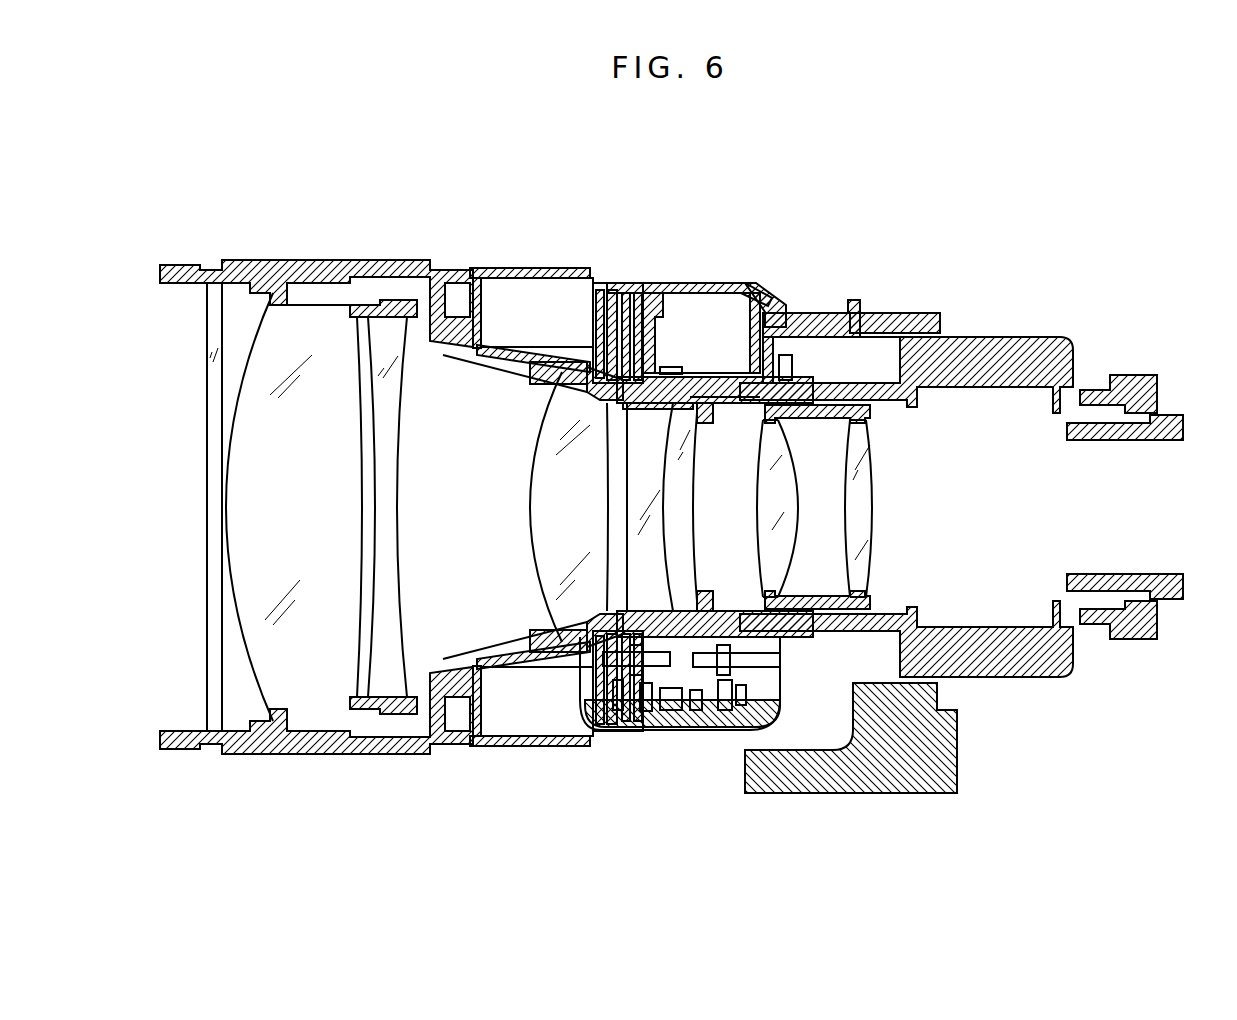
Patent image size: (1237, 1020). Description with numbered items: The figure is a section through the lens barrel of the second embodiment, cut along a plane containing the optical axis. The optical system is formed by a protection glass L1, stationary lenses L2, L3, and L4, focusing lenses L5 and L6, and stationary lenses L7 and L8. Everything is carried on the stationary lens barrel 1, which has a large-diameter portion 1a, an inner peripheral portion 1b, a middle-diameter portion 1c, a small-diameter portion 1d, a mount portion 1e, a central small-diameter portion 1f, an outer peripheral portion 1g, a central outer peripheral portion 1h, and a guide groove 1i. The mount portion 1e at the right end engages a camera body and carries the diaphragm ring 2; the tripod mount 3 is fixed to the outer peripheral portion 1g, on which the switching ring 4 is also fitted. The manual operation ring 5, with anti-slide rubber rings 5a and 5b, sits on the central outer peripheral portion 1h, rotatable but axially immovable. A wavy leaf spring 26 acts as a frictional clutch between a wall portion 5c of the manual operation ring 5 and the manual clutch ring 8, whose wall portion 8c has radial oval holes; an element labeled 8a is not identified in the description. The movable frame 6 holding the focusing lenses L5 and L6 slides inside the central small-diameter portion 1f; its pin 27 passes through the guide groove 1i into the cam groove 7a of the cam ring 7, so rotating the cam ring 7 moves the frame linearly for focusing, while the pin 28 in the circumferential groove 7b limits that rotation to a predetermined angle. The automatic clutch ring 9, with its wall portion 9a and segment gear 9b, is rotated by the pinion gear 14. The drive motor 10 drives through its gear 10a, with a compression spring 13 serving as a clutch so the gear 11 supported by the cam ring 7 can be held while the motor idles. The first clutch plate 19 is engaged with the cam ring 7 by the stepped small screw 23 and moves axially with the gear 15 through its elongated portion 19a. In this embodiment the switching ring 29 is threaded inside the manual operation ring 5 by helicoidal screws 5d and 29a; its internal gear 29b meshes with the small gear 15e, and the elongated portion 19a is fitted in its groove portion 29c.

The stationary lens barrel 1 is at (397, 262).
The large-diameter portion 1a is at (297, 262).
The inner peripheral portion 1b is at (323, 293).
The middle-diameter portion 1c is at (525, 342).
The small-diameter portion 1d is at (830, 416).
The mount portion 1e is at (1165, 420).
The central small-diameter portion 1f is at (800, 412).
The outer peripheral portion 1g is at (962, 340).
The central outer peripheral portion 1h is at (868, 320).
The guide groove 1i is at (712, 405).
The diaphragm ring 2 is at (1120, 378).
The tripod mount 3 is at (925, 320).
The switching ring 4 is at (980, 296).
The manual operation ring 5 is at (592, 288).
The rubber ring 5a is at (742, 286).
The rubber ring 5b is at (472, 270).
The wall portion 5c is at (598, 290).
The helicoidal screw 5d is at (625, 300).
The movable frame 6 is at (612, 408).
The cam ring 7 is at (612, 300).
The cam groove 7a is at (712, 283).
The circumferential groove 7b is at (697, 440).
The manual clutch ring 8 is at (593, 315).
The sleeve wall 8a is at (636, 300).
The wall portion 8c is at (588, 360).
The automatic clutch ring 9 is at (805, 318).
The wall portion 9a is at (800, 313).
The segment gear 9b is at (793, 366).
The drive motor 10 is at (652, 715).
The gear 10a is at (680, 705).
The gear 11 is at (742, 705).
The compression spring 13 is at (700, 712).
The pinion gear 14 is at (858, 306).
The gear 15 is at (616, 715).
The small gear 15e is at (630, 722).
The first clutch plate 19 is at (780, 316).
The elongated portion 19a is at (657, 343).
The stepped small screw 23 is at (672, 369).
The wavy leaf spring 26 is at (603, 290).
The pin 27 is at (700, 422).
The pin 28 is at (600, 396).
The switching ring 29 is at (588, 727).
The helicoidal screw 29a is at (548, 737).
The internal gear 29b is at (640, 262).
The groove portion 29c is at (595, 692).
The protection glass L1 is at (207, 505).
The stationary lens L2 is at (240, 572).
The stationary lens L3 is at (390, 498).
The stationary lens L4 is at (548, 505).
The focusing lens L5 is at (640, 535).
The focusing lens L6 is at (690, 582).
The stationary lens L7 is at (770, 548).
The stationary lens L8 is at (858, 532).